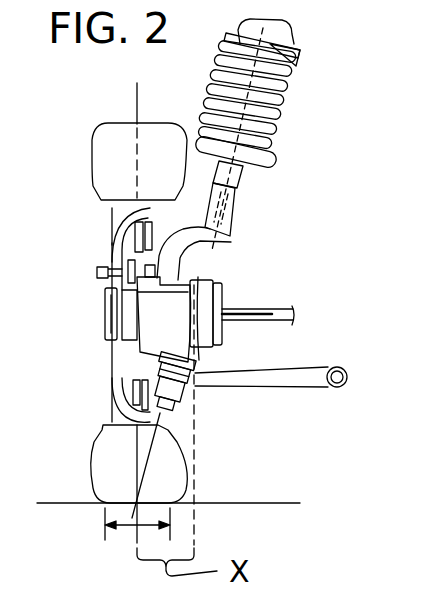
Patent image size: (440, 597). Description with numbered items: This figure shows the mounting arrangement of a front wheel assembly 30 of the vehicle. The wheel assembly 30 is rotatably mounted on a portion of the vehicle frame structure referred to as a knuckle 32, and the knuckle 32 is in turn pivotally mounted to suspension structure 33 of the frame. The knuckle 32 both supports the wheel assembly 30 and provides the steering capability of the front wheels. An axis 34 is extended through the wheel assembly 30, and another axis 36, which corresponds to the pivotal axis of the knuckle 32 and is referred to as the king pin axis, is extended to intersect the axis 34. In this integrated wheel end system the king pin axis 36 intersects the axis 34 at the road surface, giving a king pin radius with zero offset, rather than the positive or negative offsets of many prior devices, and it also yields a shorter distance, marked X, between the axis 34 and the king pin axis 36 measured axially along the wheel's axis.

The front wheel assembly 30 is at (92, 147).
The knuckle 32 is at (205, 262).
The suspension structure 33 is at (256, 188).
The axis 34 is at (134, 96).
The king pin axis 36 is at (157, 447).